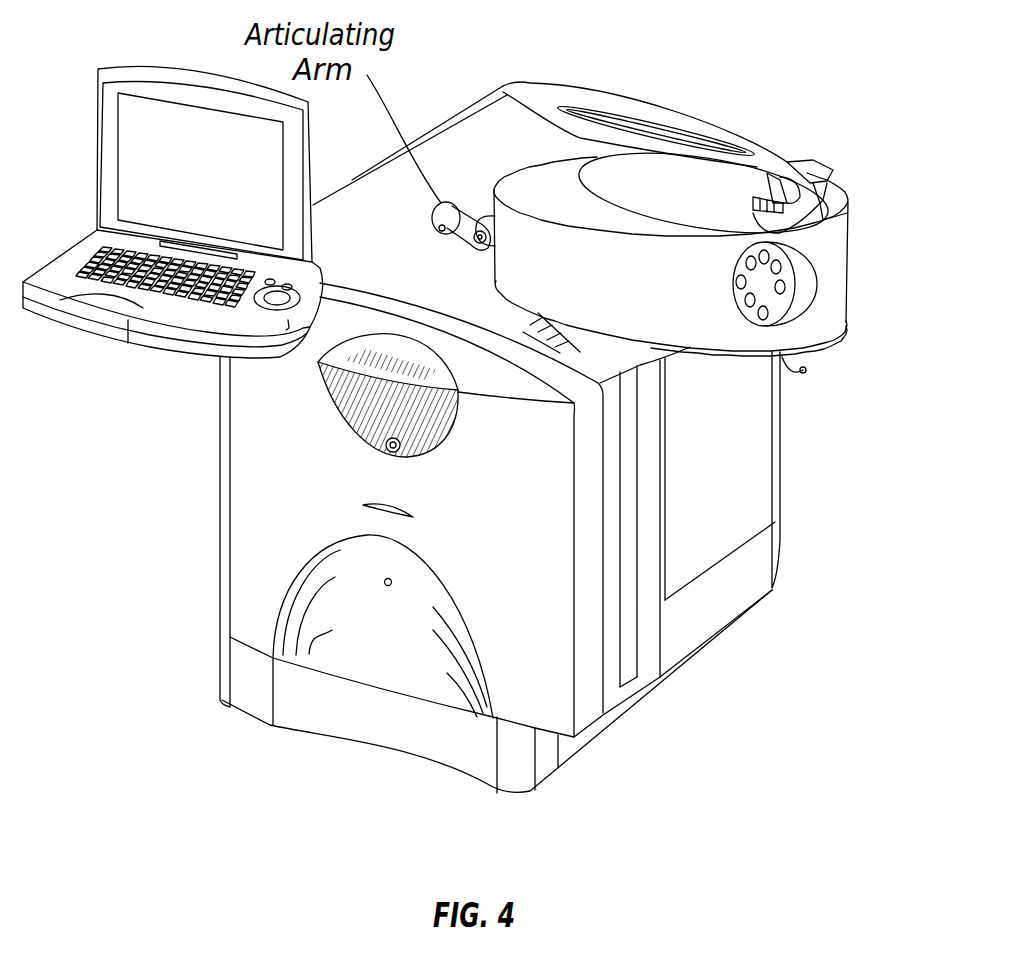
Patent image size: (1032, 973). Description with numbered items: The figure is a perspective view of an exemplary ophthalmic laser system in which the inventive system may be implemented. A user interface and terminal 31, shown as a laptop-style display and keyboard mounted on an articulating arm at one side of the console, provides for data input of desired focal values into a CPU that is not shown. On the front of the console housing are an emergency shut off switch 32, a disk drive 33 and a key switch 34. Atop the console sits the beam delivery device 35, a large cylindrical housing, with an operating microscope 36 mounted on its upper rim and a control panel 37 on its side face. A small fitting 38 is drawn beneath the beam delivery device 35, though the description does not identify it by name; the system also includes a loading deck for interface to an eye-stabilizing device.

The user interface and terminal 31 is at (137, 158).
The emergency shut off switch 32 is at (370, 447).
The disk drive 33 is at (363, 509).
The key switch 34 is at (380, 586).
The beam delivery device 35 is at (522, 177).
The operating microscope 36 is at (833, 187).
The control panel 37 is at (807, 272).
The bracket 38 is at (813, 362).